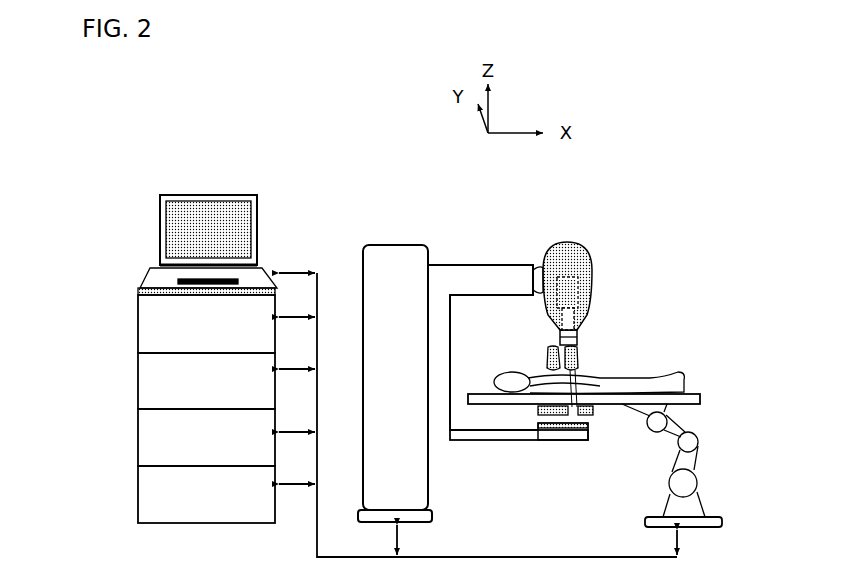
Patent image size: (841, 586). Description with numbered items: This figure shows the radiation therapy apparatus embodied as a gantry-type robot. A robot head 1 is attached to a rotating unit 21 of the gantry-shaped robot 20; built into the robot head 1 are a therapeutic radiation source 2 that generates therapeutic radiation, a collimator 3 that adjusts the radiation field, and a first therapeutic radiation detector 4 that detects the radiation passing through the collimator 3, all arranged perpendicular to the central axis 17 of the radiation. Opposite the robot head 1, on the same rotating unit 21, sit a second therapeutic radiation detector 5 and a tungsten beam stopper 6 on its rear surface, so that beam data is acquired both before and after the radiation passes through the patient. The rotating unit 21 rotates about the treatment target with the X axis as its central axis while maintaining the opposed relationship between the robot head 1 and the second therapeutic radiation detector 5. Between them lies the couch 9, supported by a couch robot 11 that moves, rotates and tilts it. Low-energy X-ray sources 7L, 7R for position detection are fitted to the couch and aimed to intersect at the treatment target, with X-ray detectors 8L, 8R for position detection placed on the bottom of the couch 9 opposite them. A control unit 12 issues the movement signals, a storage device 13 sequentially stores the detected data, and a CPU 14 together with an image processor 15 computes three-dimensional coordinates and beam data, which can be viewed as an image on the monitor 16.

The robot head 1 is at (570, 252).
The therapeutic radiation source 2 is at (580, 287).
The collimator 3 is at (580, 312).
The first therapeutic radiation detector 4 is at (585, 333).
The second therapeutic radiation detector 5 is at (590, 425).
The beam stopper 6 is at (548, 441).
The X-ray source for position detection 7L is at (548, 355).
The X-ray source for position detection 7R is at (580, 360).
The X-ray detector for position detection 8L is at (538, 410).
The X-ray detector for position detection 8R is at (598, 412).
The couch 9 is at (703, 398).
The couch robot 11 is at (700, 462).
The control unit 12 is at (138, 489).
The storage device 13 is at (138, 432).
The central processing unit 14 is at (138, 372).
The image processor 15 is at (138, 317).
The monitor 16 is at (258, 218).
The central axis 17 is at (535, 372).
The gantry-shaped robot 20 is at (425, 247).
The rotating unit 21 is at (448, 285).